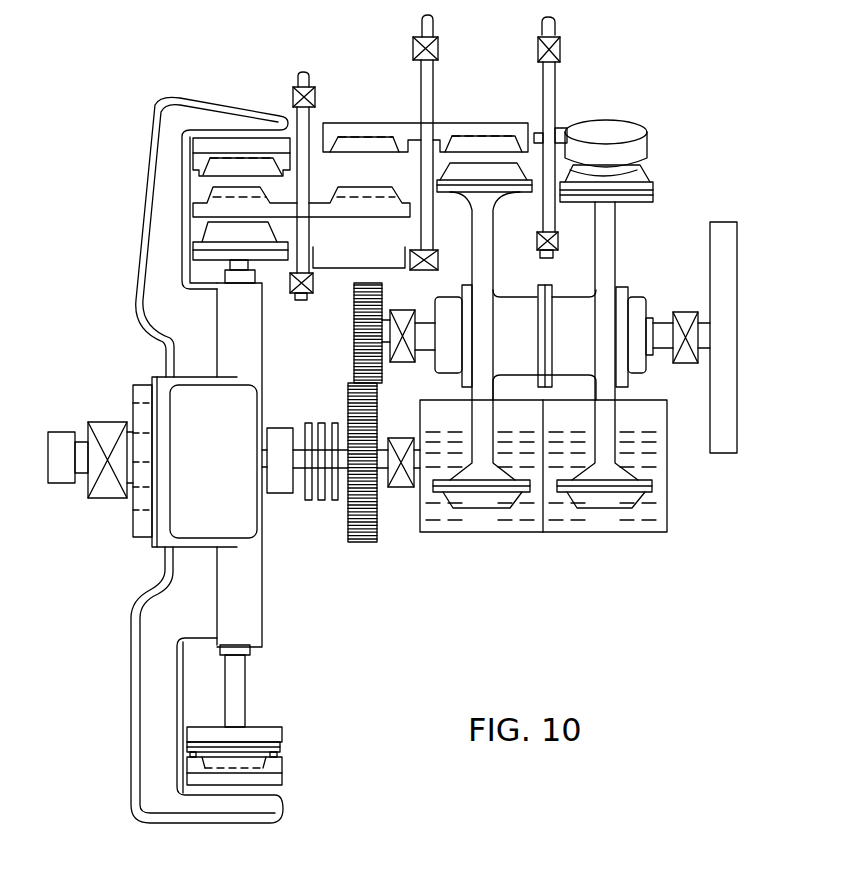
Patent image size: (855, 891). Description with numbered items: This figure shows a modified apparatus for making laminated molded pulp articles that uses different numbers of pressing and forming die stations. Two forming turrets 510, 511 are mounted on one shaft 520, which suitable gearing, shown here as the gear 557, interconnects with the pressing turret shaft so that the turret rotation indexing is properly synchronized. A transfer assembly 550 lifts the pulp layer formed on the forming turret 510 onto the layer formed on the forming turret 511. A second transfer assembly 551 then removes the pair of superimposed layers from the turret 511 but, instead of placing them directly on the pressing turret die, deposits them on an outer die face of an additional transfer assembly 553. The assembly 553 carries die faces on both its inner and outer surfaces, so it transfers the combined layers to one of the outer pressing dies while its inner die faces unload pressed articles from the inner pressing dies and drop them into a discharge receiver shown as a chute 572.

The forming turret 510 is at (624, 238).
The forming turret 511 is at (498, 288).
The shaft 520 is at (662, 320).
The transfer assembly 550 is at (566, 117).
The second transfer assembly 551 is at (443, 115).
The additional transfer assembly 553 is at (316, 121).
The gear 557 is at (348, 378).
The chute 572 is at (338, 266).